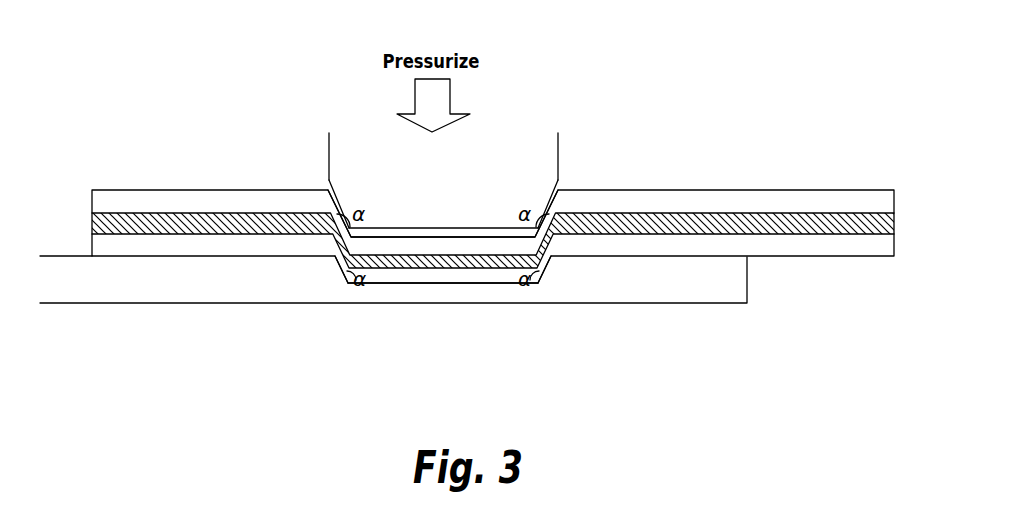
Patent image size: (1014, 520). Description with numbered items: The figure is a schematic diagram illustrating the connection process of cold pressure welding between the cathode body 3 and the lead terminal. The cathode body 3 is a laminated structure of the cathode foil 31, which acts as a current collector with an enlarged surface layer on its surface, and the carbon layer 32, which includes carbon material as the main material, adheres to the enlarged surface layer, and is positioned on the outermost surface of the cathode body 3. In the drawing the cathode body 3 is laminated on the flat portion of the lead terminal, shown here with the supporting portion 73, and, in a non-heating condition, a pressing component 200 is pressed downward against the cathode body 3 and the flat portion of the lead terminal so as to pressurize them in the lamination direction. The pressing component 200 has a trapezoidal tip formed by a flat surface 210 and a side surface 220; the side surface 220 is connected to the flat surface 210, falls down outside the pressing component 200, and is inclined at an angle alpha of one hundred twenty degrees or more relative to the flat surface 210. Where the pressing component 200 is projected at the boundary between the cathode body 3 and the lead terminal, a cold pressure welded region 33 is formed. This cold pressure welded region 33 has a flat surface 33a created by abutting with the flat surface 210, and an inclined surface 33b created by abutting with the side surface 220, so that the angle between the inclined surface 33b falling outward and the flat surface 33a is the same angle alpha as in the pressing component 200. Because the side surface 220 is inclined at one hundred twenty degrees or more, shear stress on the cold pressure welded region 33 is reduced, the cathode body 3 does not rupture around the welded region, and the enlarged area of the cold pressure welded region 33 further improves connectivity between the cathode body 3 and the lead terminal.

The cathode body 3 is at (235, 188).
The cathode foil 31 is at (717, 222).
The carbon layer 32 is at (641, 190).
The cold pressure welded region 33 is at (422, 287).
The flat surface 33a is at (443, 283).
The inclined surface 33b is at (337, 272).
The support member 73 is at (178, 304).
The pressing component 200 is at (328, 155).
The flat surface 210 is at (478, 229).
The side surface 220 is at (317, 193).